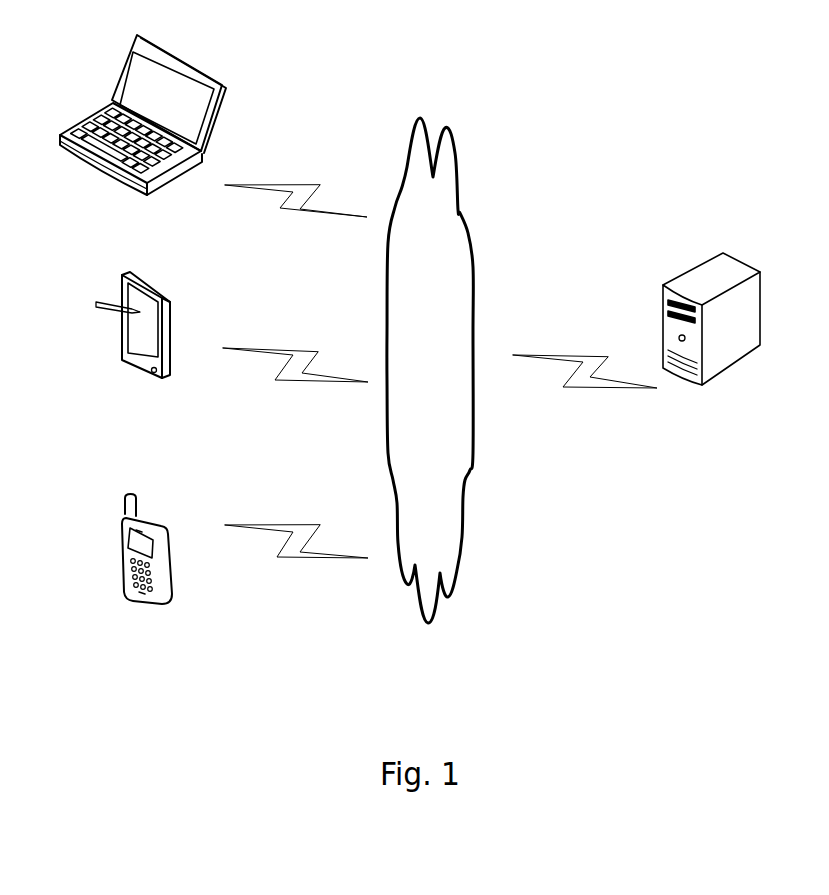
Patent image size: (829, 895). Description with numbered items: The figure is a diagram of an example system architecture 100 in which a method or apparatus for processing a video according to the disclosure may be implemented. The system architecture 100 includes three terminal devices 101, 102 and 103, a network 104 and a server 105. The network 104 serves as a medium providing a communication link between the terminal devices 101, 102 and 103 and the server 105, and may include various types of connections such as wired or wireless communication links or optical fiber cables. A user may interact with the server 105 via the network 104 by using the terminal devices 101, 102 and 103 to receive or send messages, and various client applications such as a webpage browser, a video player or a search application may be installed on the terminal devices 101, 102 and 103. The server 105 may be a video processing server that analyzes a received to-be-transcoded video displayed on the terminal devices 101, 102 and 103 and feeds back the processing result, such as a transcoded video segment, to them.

The system architecture 100 is at (685, 26).
The terminal device 101 is at (147, 568).
The terminal device 102 is at (133, 346).
The terminal device 103 is at (143, 125).
The network 104 is at (430, 370).
The server 105 is at (711, 353).